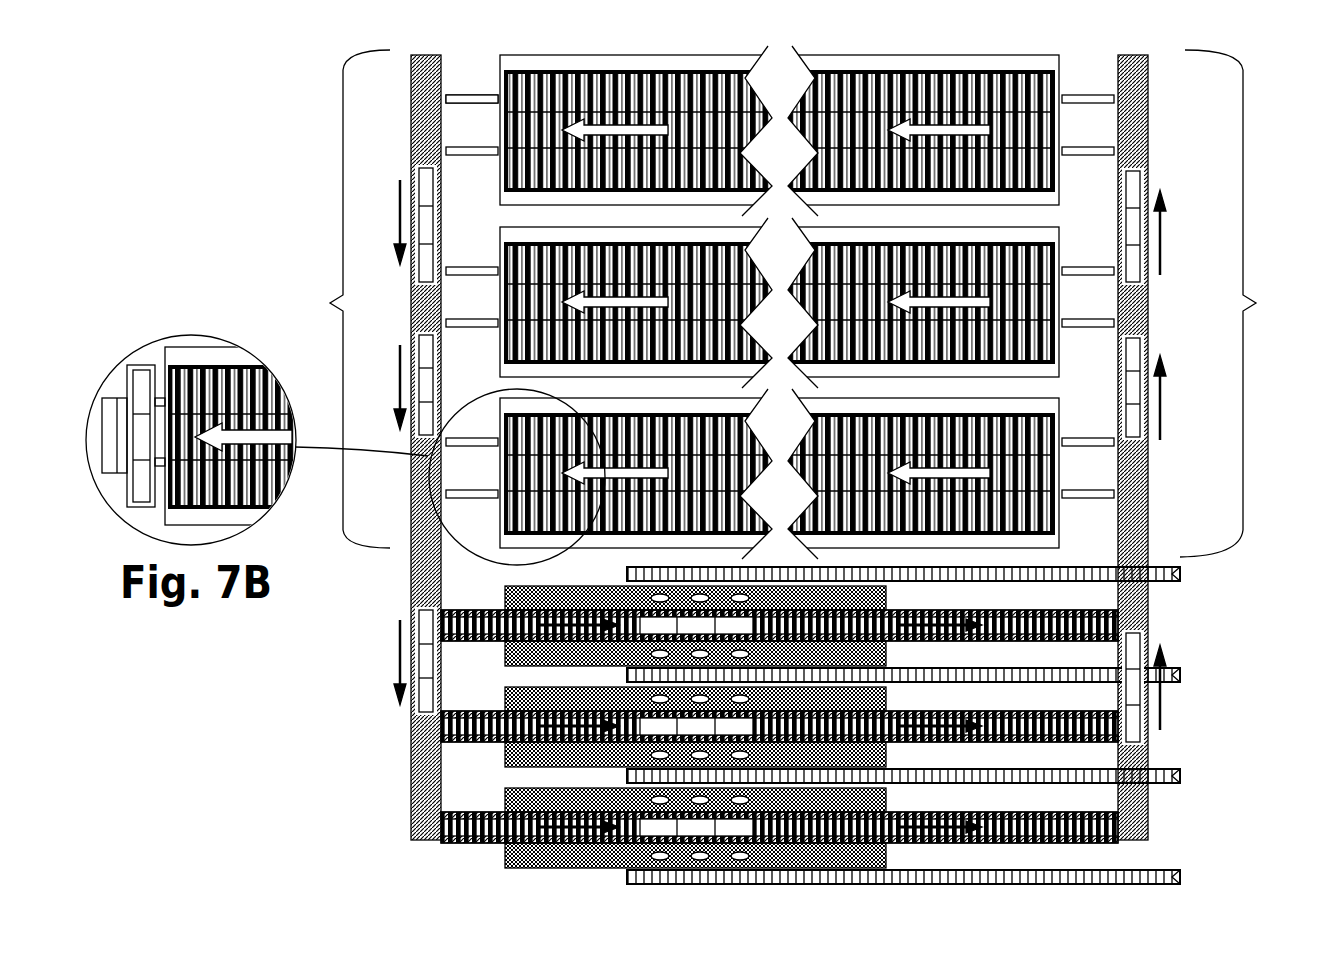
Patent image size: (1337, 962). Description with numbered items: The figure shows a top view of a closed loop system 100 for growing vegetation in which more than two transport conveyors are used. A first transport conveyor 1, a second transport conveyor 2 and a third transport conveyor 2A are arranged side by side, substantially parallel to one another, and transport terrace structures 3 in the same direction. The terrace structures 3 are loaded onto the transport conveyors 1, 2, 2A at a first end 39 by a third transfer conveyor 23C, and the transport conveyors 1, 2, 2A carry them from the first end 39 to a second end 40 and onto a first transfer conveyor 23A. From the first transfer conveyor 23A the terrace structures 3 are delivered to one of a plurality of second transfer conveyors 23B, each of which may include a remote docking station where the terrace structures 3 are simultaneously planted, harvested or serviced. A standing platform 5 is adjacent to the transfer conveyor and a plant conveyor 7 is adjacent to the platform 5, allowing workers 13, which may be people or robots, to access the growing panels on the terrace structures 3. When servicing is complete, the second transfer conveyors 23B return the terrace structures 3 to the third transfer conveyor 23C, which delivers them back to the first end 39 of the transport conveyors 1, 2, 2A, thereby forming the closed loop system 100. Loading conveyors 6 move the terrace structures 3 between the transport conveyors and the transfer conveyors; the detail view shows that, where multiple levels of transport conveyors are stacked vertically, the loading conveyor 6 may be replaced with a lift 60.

In FIG. 7A, the first transport conveyor 1 is at (592, 60).
In FIG. 7A, the second transport conveyor 2 is at (510, 232).
In FIG. 7A, the third transport conveyor 2A is at (1030, 420).
In FIG. 7A, the terrace structure 3 is at (690, 72).
In FIG. 7B, the terrace structure 3 is at (130, 378).
In FIG. 7A, the standing platform 5 is at (832, 868).
In FIG. 7A, the loading conveyor 6 is at (452, 97).
In FIG. 7A, the plant conveyor 7 is at (1168, 569).
In FIG. 7A, the worker 13 is at (662, 866).
In FIG. 7A, the first transfer conveyor 23A is at (430, 770).
In FIG. 7A, the second transfer conveyor 23B is at (468, 844).
In FIG. 7A, the third transfer conveyor 23C is at (1150, 510).
In FIG. 7A, the first end 39 is at (1260, 303).
In FIG. 7A, the second end 40 is at (328, 303).
In FIG. 7B, the lift 60 is at (118, 470).
In FIG. 7A, the closed loop system 100 is at (900, 45).